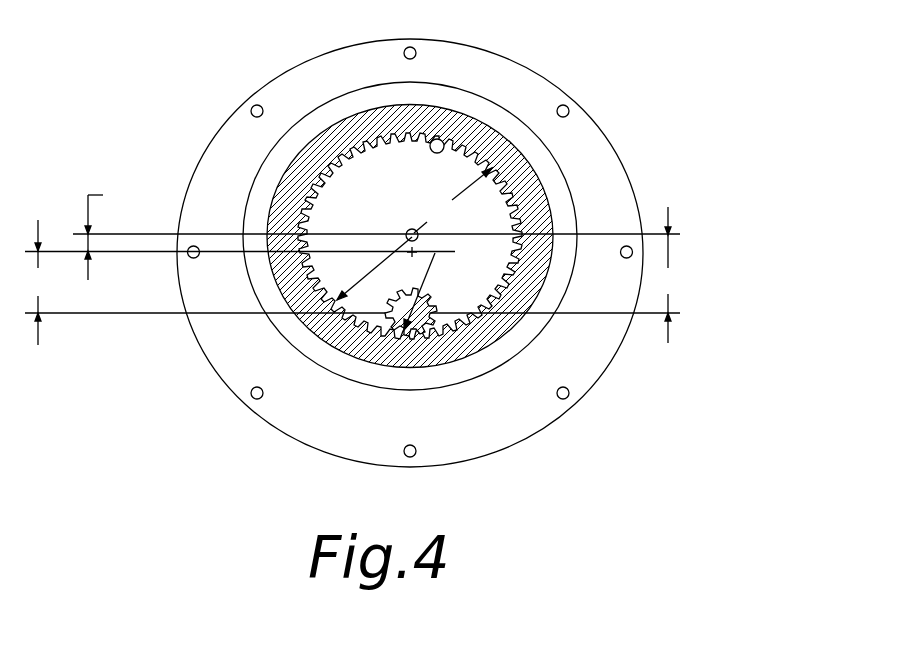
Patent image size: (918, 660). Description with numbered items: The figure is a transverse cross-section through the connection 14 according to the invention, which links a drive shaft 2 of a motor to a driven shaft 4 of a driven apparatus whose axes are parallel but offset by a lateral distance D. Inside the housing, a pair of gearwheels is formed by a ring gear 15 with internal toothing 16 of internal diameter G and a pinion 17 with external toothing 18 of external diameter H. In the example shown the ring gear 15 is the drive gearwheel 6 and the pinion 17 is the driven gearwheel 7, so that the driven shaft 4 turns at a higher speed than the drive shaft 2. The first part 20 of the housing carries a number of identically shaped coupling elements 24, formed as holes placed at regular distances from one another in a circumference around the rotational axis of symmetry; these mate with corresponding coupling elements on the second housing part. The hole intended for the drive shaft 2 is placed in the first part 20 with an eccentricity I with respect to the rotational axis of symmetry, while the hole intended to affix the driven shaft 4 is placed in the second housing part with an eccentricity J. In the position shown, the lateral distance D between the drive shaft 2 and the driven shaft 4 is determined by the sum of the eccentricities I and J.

The connection 14 is at (178, 80).
The coupling elements 24 is at (404, 52).
The drive shaft 2 is at (405, 232).
The internal toothing 16 is at (462, 113).
The ring gear 15 is at (487, 123).
The drive gearwheel 6 is at (480, 330).
The driven shaft 4 is at (490, 343).
The driven gearwheel 7 is at (438, 347).
The pinion 17 is at (370, 327).
The external toothing 18 is at (377, 333).
The first part of the housing 20 is at (375, 415).
The internal diameter G is at (414, 234).
The external diameter H is at (438, 287).
The eccentricity I is at (101, 234).
The eccentricity J is at (35, 282).
The lateral distance D is at (668, 275).